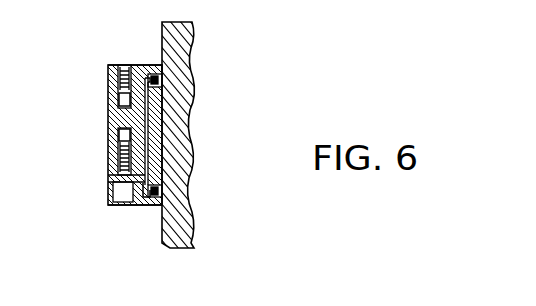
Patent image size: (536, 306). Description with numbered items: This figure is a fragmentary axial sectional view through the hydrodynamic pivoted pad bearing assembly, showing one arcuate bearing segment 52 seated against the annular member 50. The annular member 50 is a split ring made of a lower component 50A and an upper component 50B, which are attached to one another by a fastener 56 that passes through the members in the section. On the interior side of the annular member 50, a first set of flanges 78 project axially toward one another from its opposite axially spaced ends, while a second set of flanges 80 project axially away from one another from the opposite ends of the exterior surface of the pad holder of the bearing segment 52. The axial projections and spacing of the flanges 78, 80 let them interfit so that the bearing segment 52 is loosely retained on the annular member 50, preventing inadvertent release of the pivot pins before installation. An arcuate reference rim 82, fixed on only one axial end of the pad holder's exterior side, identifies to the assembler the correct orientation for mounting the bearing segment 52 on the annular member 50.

The arcuate bearing segment 52 is at (162, 27).
The annular member 50 is at (109, 120).
The lower component 50A is at (107, 203).
The upper component 50B is at (107, 68).
The fastener 56 is at (110, 176).
The first set of flanges 78 is at (149, 84).
The second set of flanges 80 is at (156, 80).
The arcuate reference rim 82 is at (147, 198).